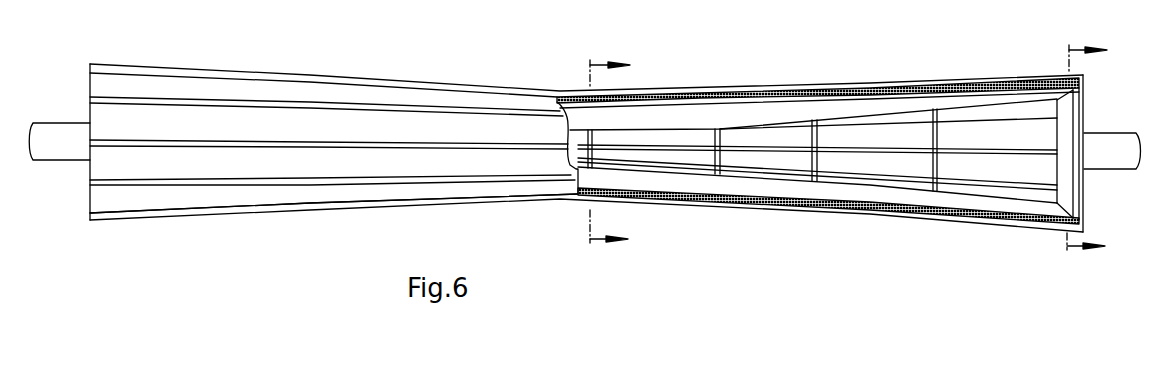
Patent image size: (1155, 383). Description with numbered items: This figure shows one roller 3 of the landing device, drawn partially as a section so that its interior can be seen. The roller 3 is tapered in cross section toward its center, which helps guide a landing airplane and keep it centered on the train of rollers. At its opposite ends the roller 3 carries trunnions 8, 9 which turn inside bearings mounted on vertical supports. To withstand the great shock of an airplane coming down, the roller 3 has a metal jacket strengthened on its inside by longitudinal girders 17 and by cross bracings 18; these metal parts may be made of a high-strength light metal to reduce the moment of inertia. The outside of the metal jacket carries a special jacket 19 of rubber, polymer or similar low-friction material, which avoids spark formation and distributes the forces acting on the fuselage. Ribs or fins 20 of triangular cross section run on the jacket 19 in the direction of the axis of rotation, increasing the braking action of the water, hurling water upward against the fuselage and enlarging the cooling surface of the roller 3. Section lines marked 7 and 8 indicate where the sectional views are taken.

The roller 3 is at (380, 82).
The section line 7- 7 is at (610, 155).
The trunnion 8 is at (1123, 131).
The trunnion 9 is at (62, 121).
The longitudinal girders 17 is at (743, 181).
The cross bracings 18 is at (827, 122).
The jacket 19 is at (720, 93).
The ribs or fins 20 is at (275, 187).